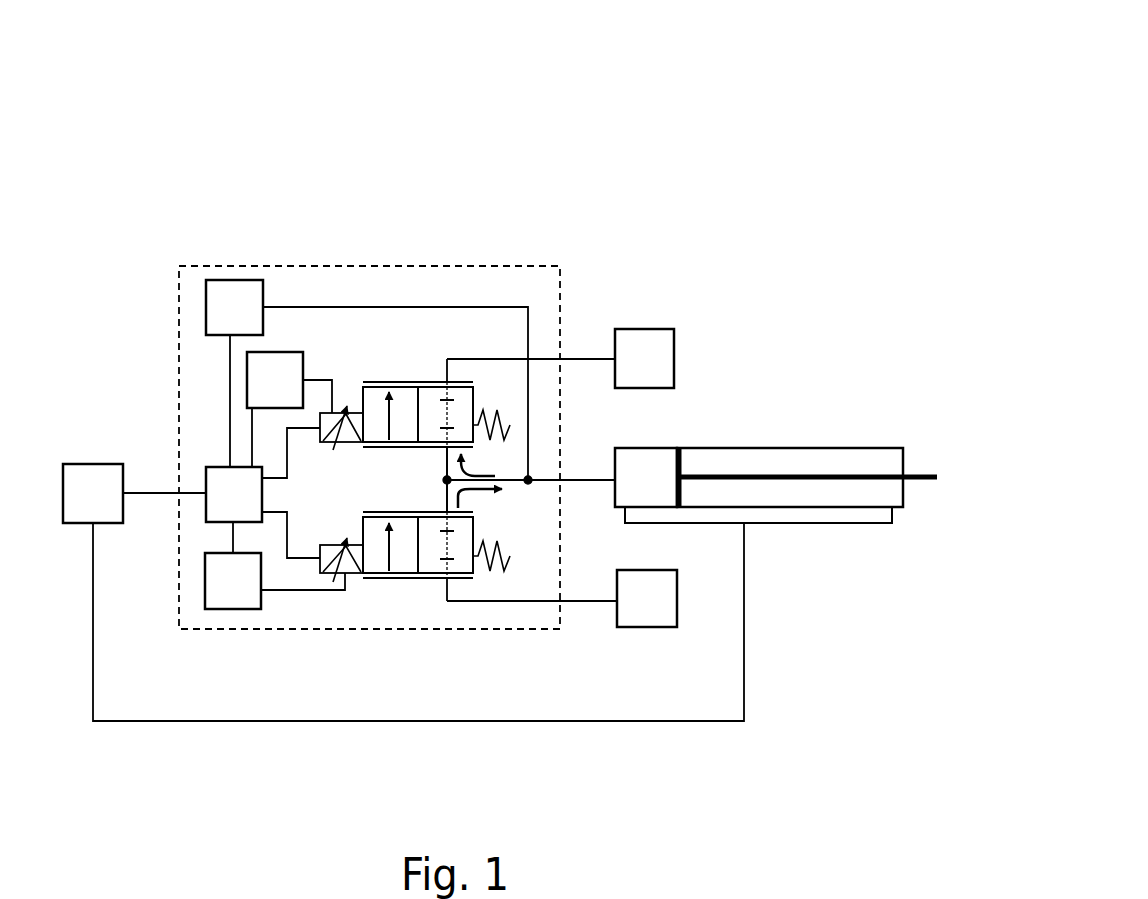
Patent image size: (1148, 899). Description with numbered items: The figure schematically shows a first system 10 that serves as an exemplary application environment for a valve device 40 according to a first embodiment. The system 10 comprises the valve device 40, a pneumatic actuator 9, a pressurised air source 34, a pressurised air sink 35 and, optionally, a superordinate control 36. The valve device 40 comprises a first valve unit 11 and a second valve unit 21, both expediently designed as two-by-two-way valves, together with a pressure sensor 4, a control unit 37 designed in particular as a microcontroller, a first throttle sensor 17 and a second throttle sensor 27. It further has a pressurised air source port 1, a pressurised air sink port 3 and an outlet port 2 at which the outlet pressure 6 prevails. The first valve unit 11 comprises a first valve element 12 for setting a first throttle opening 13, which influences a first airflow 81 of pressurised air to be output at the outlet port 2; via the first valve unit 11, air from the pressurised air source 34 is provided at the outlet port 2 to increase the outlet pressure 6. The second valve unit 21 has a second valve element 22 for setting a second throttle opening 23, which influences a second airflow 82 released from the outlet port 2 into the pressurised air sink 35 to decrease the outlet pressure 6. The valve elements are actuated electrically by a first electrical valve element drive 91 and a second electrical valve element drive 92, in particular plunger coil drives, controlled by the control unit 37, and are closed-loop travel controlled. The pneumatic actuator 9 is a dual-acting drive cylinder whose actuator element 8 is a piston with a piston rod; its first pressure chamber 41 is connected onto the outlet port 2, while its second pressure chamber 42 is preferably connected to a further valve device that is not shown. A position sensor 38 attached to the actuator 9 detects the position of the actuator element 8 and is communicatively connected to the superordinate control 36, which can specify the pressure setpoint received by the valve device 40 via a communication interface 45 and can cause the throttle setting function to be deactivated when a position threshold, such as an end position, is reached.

The system 10 is at (200, 116).
The valve device 40 is at (369, 434).
The pressure sensor 4 is at (234, 307).
The first throttle sensor 17 is at (275, 380).
The second throttle sensor 27 is at (233, 581).
The control unit 37 is at (234, 494).
The superordinate control 36 is at (93, 493).
The communication interface 45 is at (164, 481).
The second valve unit 21 is at (431, 326).
The second valve element 22 is at (392, 370).
The first valve unit 11 is at (421, 595).
The first valve element 12 is at (390, 592).
The first electrical valve element drive 91 is at (325, 450).
The second electrical valve element drive 92 is at (325, 540).
The second throttle opening 23 is at (438, 456).
The first throttle opening 13 is at (438, 504).
The second airflow 82 is at (478, 462).
The first airflow 81 is at (481, 505).
The outlet pressure 6 is at (495, 491).
The outlet port 2 is at (571, 469).
The pressurised air sink port 3 is at (531, 349).
The pressurised air source port 1 is at (532, 589).
The pressurised air sink 35 is at (644, 358).
The pressurised air source 34 is at (647, 598).
The first pressure chamber 41 is at (646, 477).
The pneumatic actuator 9 is at (873, 448).
The actuator element 8 is at (683, 465).
The second pressure chamber 42 is at (809, 464).
The position sensor 38 is at (786, 517).